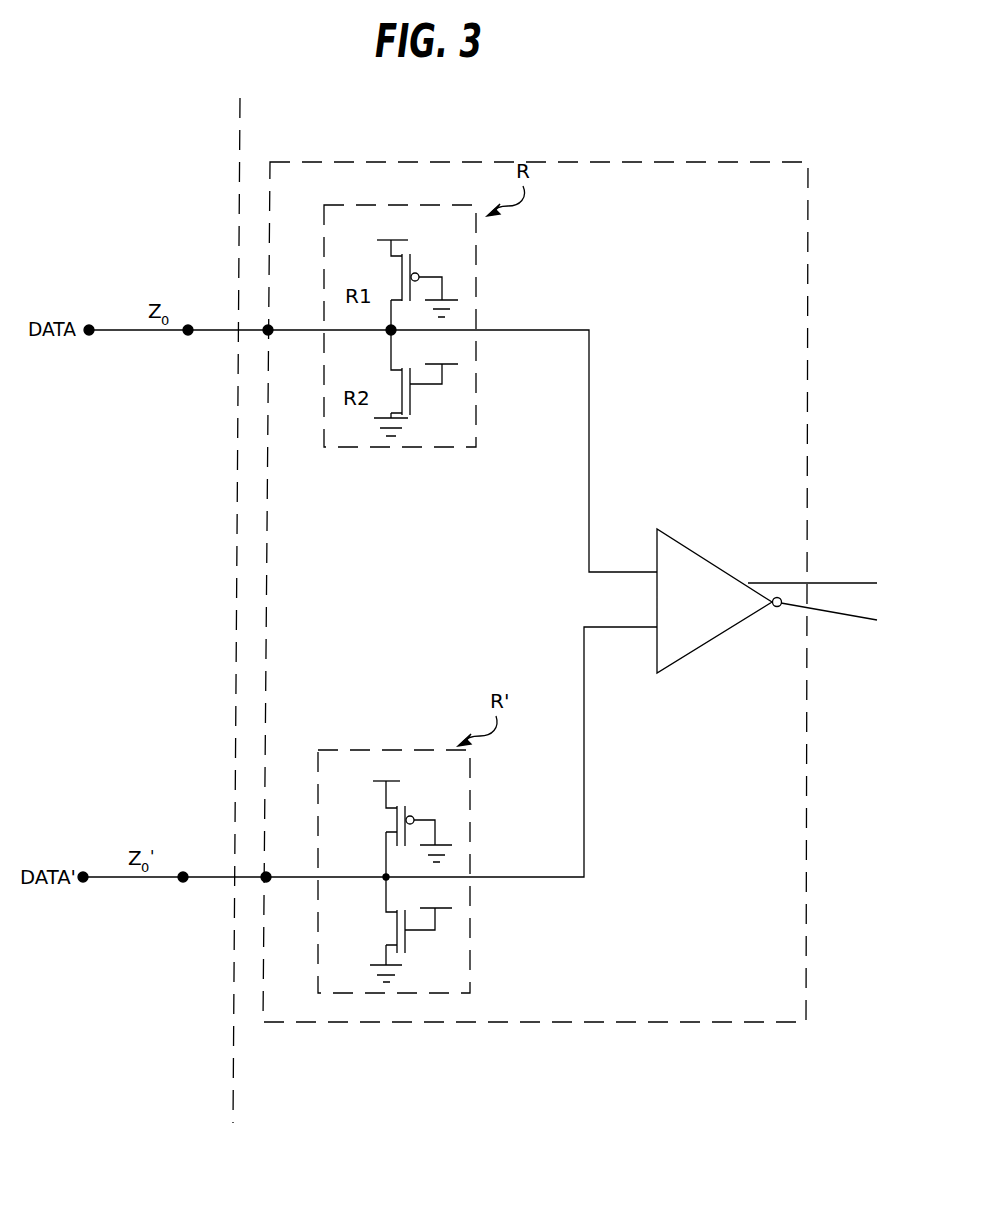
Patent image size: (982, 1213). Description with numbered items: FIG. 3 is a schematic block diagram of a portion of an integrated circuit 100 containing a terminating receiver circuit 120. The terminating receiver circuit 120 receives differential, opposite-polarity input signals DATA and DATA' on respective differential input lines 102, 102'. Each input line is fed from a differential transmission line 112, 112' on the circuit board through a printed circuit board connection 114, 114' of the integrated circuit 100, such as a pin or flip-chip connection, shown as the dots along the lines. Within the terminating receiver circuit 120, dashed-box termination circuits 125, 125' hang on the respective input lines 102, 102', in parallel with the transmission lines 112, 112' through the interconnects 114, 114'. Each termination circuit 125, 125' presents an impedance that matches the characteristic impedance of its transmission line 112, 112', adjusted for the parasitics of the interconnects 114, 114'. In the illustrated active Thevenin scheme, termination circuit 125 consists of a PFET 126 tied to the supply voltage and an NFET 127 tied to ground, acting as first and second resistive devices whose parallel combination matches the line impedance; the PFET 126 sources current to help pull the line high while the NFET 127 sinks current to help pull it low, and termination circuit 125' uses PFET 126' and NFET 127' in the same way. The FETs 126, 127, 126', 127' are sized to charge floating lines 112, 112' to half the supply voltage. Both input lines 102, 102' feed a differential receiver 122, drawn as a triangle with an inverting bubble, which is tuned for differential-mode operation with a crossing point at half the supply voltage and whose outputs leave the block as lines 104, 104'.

The integrated circuit 100 is at (292, 122).
The terminating receiver circuit 120 is at (392, 160).
The termination circuit 125 is at (380, 323).
The termination circuit 125' is at (375, 869).
The PFET 126 is at (400, 270).
The NFET 127 is at (406, 383).
The PFET 126' is at (394, 814).
The NFET 127' is at (401, 928).
The transmission line 112 is at (136, 357).
The printed circuit board connection 114 is at (209, 359).
The differential input line 102 is at (447, 448).
The transmission line 112' is at (130, 902).
The printed circuit board connection 114' is at (210, 901).
The differential input line 102' is at (459, 782).
The differential receiver 122 is at (720, 570).
The receiver output 104 is at (812, 555).
The complementary receiver output 104' is at (829, 640).